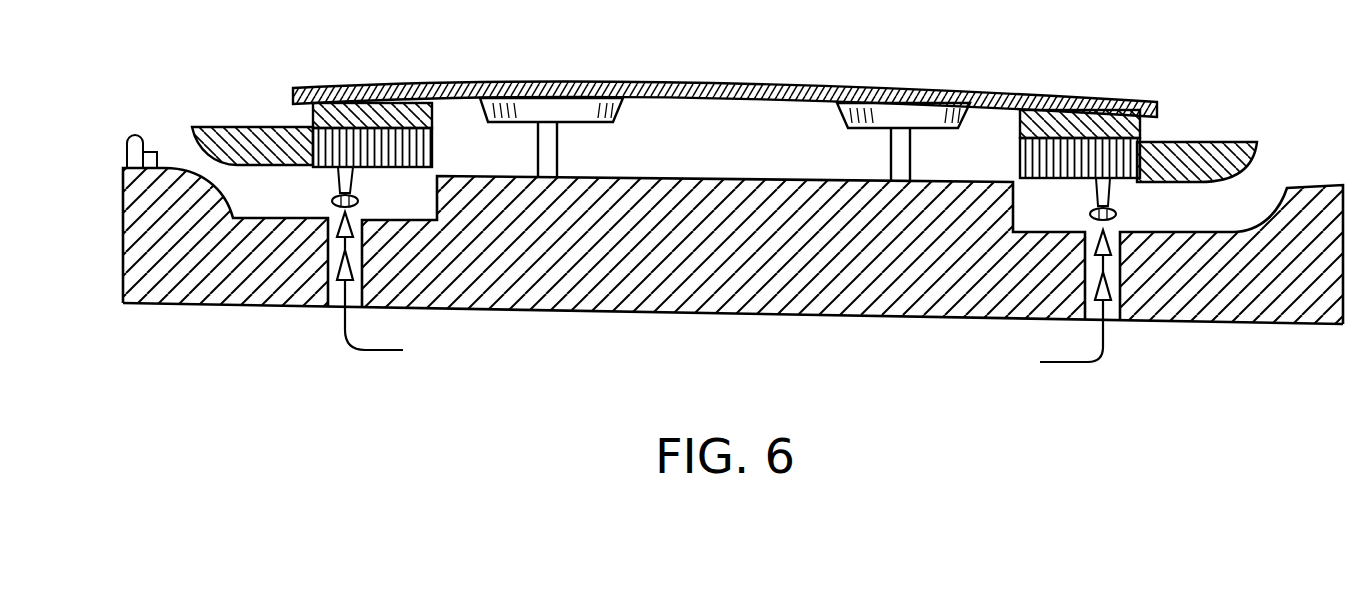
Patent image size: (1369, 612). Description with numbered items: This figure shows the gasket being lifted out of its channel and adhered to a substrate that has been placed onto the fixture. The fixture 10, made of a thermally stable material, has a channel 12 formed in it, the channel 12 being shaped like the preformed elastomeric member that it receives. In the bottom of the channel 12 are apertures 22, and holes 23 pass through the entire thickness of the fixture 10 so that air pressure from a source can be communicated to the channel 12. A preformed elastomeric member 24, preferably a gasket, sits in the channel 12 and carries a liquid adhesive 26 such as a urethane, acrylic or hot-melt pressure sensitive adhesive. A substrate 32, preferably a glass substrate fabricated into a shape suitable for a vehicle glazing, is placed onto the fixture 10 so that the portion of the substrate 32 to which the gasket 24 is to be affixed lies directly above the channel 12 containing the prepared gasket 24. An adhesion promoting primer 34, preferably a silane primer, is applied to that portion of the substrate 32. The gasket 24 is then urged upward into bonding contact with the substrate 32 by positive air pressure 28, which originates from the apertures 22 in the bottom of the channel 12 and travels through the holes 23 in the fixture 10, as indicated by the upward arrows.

The fixture 10 is at (102, 199).
The channel 12 is at (1233, 200).
The apertures 22 is at (805, 349).
The holes 23 is at (333, 255).
The preformed elastomeric member 24 is at (198, 127).
The liquid adhesive 26 is at (360, 103).
The positive air pressure 28 is at (724, 294).
The substrate 32 is at (832, 92).
The adhesion promoting primer 34 is at (1040, 100).